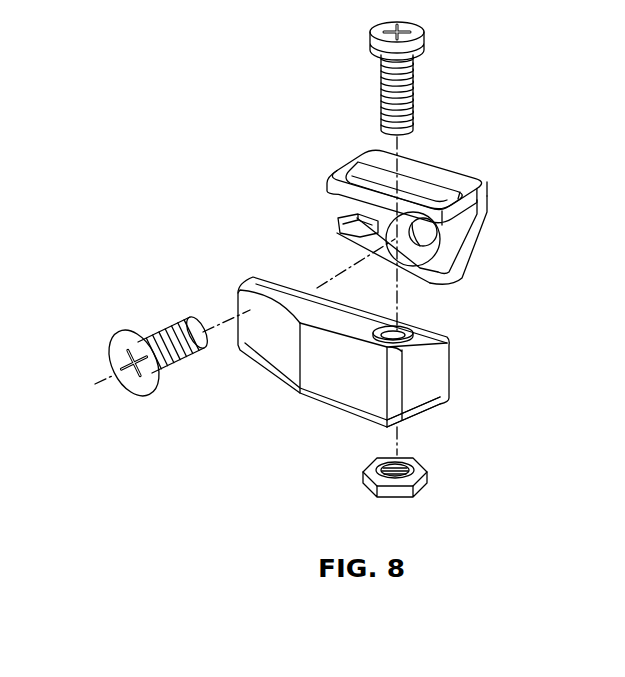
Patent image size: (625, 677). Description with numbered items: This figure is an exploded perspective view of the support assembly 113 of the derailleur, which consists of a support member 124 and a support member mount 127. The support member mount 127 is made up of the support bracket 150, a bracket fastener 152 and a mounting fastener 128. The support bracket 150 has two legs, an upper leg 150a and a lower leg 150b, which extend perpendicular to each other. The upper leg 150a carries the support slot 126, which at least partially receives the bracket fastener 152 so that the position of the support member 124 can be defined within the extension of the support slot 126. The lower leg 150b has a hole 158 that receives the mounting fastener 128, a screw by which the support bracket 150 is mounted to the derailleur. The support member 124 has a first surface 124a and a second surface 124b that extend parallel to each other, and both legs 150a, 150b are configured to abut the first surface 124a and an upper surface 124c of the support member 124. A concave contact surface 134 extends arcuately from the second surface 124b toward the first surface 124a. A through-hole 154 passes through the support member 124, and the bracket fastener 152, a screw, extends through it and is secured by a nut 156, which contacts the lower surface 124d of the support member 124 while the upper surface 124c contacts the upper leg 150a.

The bracket fastener 152 is at (413, 79).
The support member mount 127 is at (361, 121).
The support bracket 150 is at (350, 168).
The upper leg 150a is at (447, 167).
The lower leg 150b is at (337, 233).
The support slot 126 is at (465, 238).
The hole 158 is at (443, 240).
The support assembly 113 is at (489, 297).
The through-hole 154 is at (402, 329).
The support member 124 is at (430, 375).
The first surface 124a is at (447, 350).
The second surface 124b is at (330, 390).
The upper surface 124c is at (250, 283).
The lower surface 124d is at (430, 412).
The contact surface 134 is at (263, 355).
The mounting fastener 128 is at (120, 370).
The nut 156 is at (422, 488).